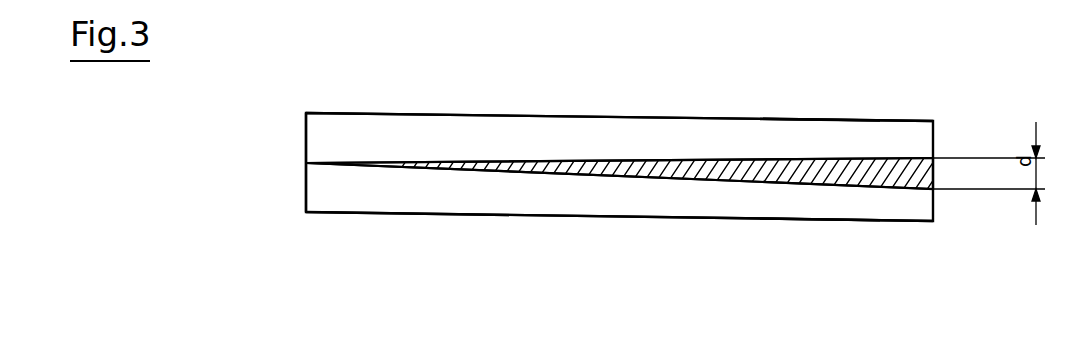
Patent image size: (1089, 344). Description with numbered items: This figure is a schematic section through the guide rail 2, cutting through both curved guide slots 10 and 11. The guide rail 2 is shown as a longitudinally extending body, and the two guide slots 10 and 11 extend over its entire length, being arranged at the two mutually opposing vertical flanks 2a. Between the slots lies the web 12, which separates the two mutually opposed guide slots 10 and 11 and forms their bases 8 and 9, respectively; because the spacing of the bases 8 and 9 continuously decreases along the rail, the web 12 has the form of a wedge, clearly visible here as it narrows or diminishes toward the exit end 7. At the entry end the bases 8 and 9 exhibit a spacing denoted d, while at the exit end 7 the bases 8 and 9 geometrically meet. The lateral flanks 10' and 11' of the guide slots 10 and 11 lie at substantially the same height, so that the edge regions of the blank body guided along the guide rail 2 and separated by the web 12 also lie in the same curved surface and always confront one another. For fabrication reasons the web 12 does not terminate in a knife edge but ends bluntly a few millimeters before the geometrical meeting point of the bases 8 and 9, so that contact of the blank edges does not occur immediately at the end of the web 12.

The guide rail 2 is at (920, 112).
The vertical flanks 2a is at (509, 115).
The exit end 7 is at (306, 130).
The base of guide slot 8 is at (723, 163).
The base of guide slot 9 is at (728, 180).
The guide slot 10 is at (790, 88).
The lateral flank of guide slot 10' is at (850, 88).
The guide slot 11 is at (791, 251).
The lateral flank of guide slot 11' is at (851, 251).
The web 12 is at (655, 163).